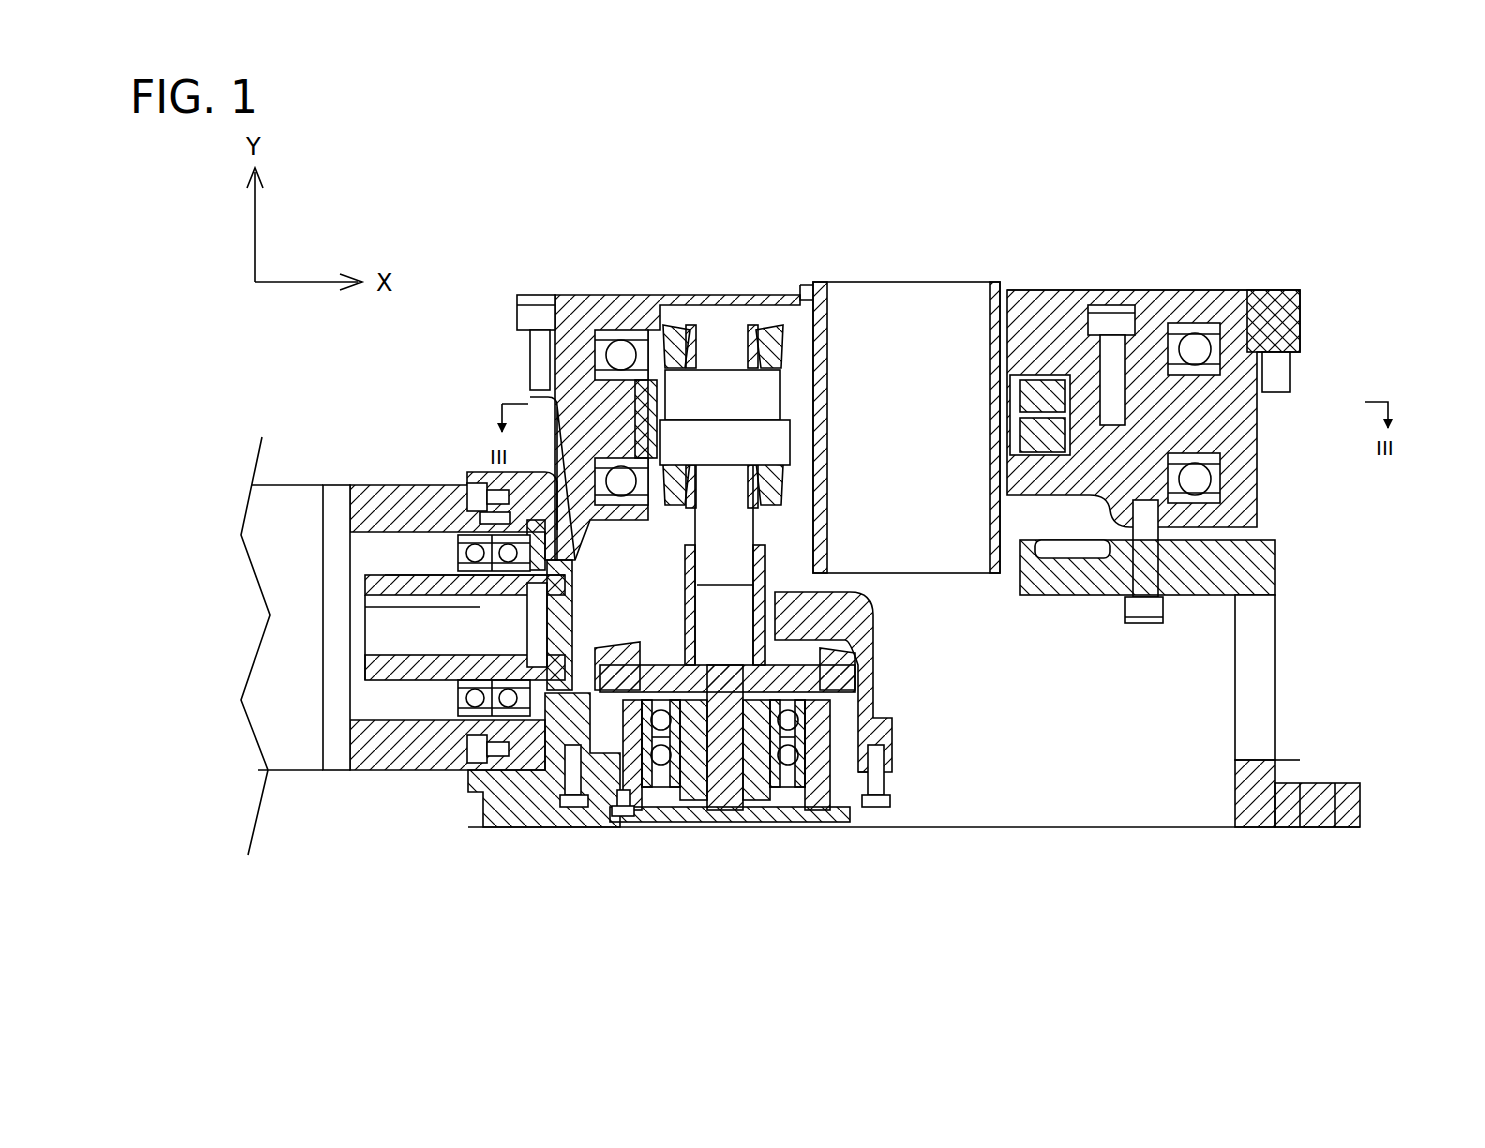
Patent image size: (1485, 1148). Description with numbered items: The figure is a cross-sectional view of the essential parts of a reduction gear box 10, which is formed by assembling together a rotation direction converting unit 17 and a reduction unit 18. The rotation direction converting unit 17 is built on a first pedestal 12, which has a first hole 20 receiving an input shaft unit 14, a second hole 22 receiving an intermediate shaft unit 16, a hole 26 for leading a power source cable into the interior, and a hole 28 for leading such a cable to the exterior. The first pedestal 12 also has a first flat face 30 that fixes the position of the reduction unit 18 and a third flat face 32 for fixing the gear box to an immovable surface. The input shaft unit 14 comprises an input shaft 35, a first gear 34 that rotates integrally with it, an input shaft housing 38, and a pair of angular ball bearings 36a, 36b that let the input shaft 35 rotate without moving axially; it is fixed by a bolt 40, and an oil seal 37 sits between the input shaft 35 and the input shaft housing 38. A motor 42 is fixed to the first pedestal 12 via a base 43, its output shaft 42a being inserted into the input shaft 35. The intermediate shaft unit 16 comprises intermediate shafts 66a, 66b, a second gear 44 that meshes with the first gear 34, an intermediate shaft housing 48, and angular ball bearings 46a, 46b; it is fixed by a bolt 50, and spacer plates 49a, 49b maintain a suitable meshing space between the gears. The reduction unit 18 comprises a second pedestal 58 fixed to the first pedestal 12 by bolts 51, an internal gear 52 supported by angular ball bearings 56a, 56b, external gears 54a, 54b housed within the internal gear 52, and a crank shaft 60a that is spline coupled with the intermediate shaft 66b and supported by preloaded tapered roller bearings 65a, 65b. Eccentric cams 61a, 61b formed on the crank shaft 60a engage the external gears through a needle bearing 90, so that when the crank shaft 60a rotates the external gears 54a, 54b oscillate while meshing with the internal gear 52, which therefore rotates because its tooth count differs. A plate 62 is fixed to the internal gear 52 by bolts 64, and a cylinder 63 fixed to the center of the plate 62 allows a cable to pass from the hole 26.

The reduction gear box 10 is at (1142, 217).
The first pedestal 12 is at (1258, 576).
The input shaft unit 14 is at (425, 468).
The intermediate shaft unit 16 is at (727, 845).
The rotation direction converting unit 17 is at (1312, 721).
The reduction unit 18 is at (1328, 357).
The first hole 20 is at (545, 520).
The second hole 22 is at (838, 648).
The hole 26 is at (1255, 693).
The hole 28 is at (970, 590).
The first flat face 30 is at (1150, 497).
The third flat face 32 is at (1255, 826).
The first gear 34 is at (621, 815).
The input shaft 35 is at (412, 690).
The angular ball bearing 36a is at (462, 770).
The angular ball bearing 36b is at (540, 775).
The oil seal 37 is at (380, 576).
The input shaft housing 38 is at (515, 800).
The bolt 40 is at (470, 488).
The motor 42 is at (300, 505).
The output shaft 42a is at (383, 635).
The base 43 is at (370, 500).
The second gear 44 is at (860, 684).
The angular ball bearing 46a is at (806, 716).
The angular ball bearing 46b is at (790, 792).
The intermediate shaft housing 48 is at (876, 792).
The spacer plate 49a is at (484, 493).
The spacer plate 49b is at (884, 770).
The bolt 50 is at (878, 758).
The bolt 51 is at (1150, 612).
The internal gear 52 is at (580, 400).
The external gear 54a is at (650, 340).
The external gear 54b is at (655, 335).
The angular ball bearing 56a is at (1195, 340).
The angular ball bearing 56b is at (1230, 458).
The second pedestal 58 is at (1105, 395).
The crank shaft 60a is at (740, 345).
The eccentric cam 61a is at (755, 400).
The eccentric cam 61b is at (752, 437).
The plate 62 is at (1252, 320).
The cylinder 63 is at (822, 350).
The bolt 64 is at (537, 300).
The tapered roller bearing 65a is at (700, 340).
The tapered roller bearing 65b is at (668, 522).
The intermediate shaft 66a is at (752, 792).
The intermediate shaft 66b is at (790, 590).
The needle bearing 90 is at (860, 400).